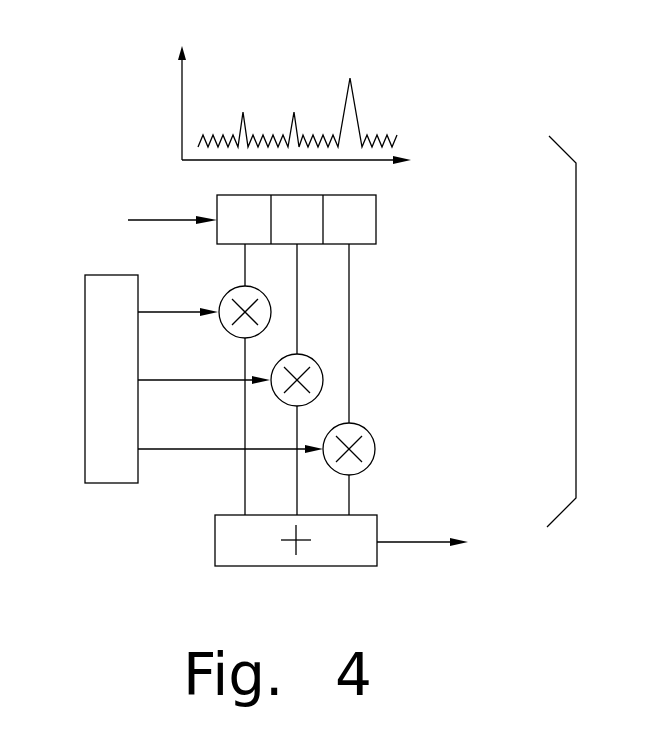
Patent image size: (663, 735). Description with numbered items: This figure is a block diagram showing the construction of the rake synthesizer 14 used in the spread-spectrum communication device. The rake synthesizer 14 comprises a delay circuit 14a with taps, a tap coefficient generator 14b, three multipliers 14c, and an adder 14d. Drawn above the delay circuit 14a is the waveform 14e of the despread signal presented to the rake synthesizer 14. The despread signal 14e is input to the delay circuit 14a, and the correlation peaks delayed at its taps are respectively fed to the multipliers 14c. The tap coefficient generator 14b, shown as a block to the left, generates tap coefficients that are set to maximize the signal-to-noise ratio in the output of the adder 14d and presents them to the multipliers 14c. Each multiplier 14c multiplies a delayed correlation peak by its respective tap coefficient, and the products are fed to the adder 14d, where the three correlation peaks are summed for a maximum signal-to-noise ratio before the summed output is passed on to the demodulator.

The rake synthesizer 14 is at (100, 166).
The delay circuit with taps 14a is at (376, 221).
The tap coefficient generator 14b is at (112, 483).
The multipliers 14c is at (375, 433).
The adder 14d is at (377, 523).
The waveform of the despread signal 14e is at (392, 137).